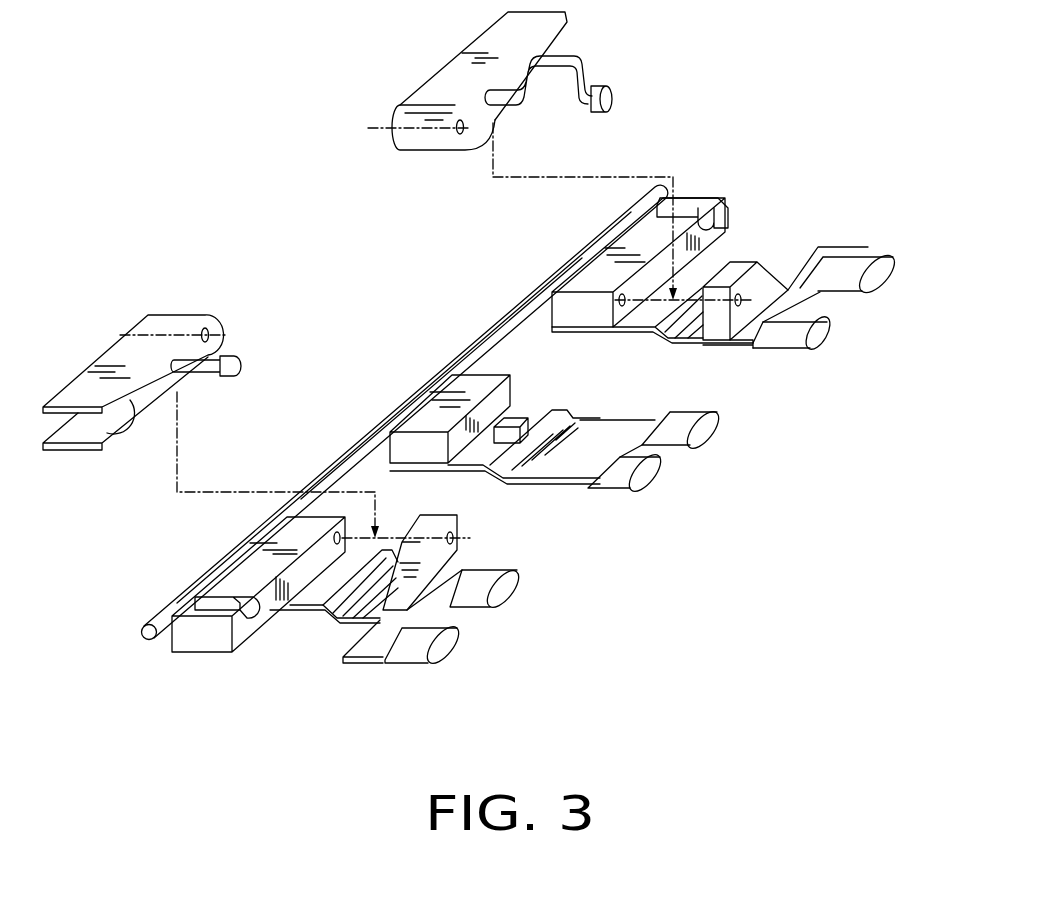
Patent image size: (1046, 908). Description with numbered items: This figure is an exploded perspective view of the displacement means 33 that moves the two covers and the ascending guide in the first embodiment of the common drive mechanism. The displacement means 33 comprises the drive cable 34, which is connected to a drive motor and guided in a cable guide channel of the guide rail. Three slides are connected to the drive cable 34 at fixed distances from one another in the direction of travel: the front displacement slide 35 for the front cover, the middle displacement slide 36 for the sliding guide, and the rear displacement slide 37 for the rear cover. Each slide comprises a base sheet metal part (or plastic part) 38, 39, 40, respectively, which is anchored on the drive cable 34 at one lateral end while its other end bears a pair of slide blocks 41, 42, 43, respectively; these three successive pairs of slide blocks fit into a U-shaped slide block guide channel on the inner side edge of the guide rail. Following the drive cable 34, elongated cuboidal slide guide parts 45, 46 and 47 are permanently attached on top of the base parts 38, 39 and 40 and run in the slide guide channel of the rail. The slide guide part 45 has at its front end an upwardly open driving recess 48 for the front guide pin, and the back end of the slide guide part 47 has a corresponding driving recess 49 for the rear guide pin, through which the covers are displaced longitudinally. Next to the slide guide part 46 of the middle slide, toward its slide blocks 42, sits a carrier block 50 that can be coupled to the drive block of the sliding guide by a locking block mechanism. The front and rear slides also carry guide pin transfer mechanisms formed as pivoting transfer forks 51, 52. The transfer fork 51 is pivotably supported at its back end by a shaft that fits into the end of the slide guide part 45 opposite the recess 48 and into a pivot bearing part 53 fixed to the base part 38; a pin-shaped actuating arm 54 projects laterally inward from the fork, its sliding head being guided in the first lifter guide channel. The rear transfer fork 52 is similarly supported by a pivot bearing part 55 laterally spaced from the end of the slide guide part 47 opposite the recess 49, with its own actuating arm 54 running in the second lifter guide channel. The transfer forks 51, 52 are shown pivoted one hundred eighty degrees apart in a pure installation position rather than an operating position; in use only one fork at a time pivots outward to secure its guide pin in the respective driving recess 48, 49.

The displacement means 33 is at (521, 424).
The drive cable 34 is at (154, 622).
The displacement slide for the front cover 35 is at (362, 627).
The displacement slide for the sliding guide 36 is at (567, 446).
The displacement slide for the rear cover 37 is at (731, 253).
The base sheet metal part 38 is at (377, 647).
The base sheet metal part 39 is at (602, 442).
The base sheet metal part 40 is at (818, 267).
The pair of slide blocks 41 is at (458, 637).
The pair of slide blocks 42 is at (660, 468).
The pair of slide blocks 43 is at (822, 334).
The slide guide part 45 is at (202, 633).
The slide guide part 46 is at (433, 413).
The slide guide part 47 is at (612, 272).
The driving recess 48 is at (210, 603).
The driving recess 49 is at (697, 210).
The carrier block 50 is at (520, 402).
The transfer fork 51 is at (120, 362).
The transfer fork 52 is at (440, 80).
The pivot bearing part 53 is at (443, 560).
The actuating arm 54 is at (588, 68).
The pivot bearing part 55 is at (753, 282).